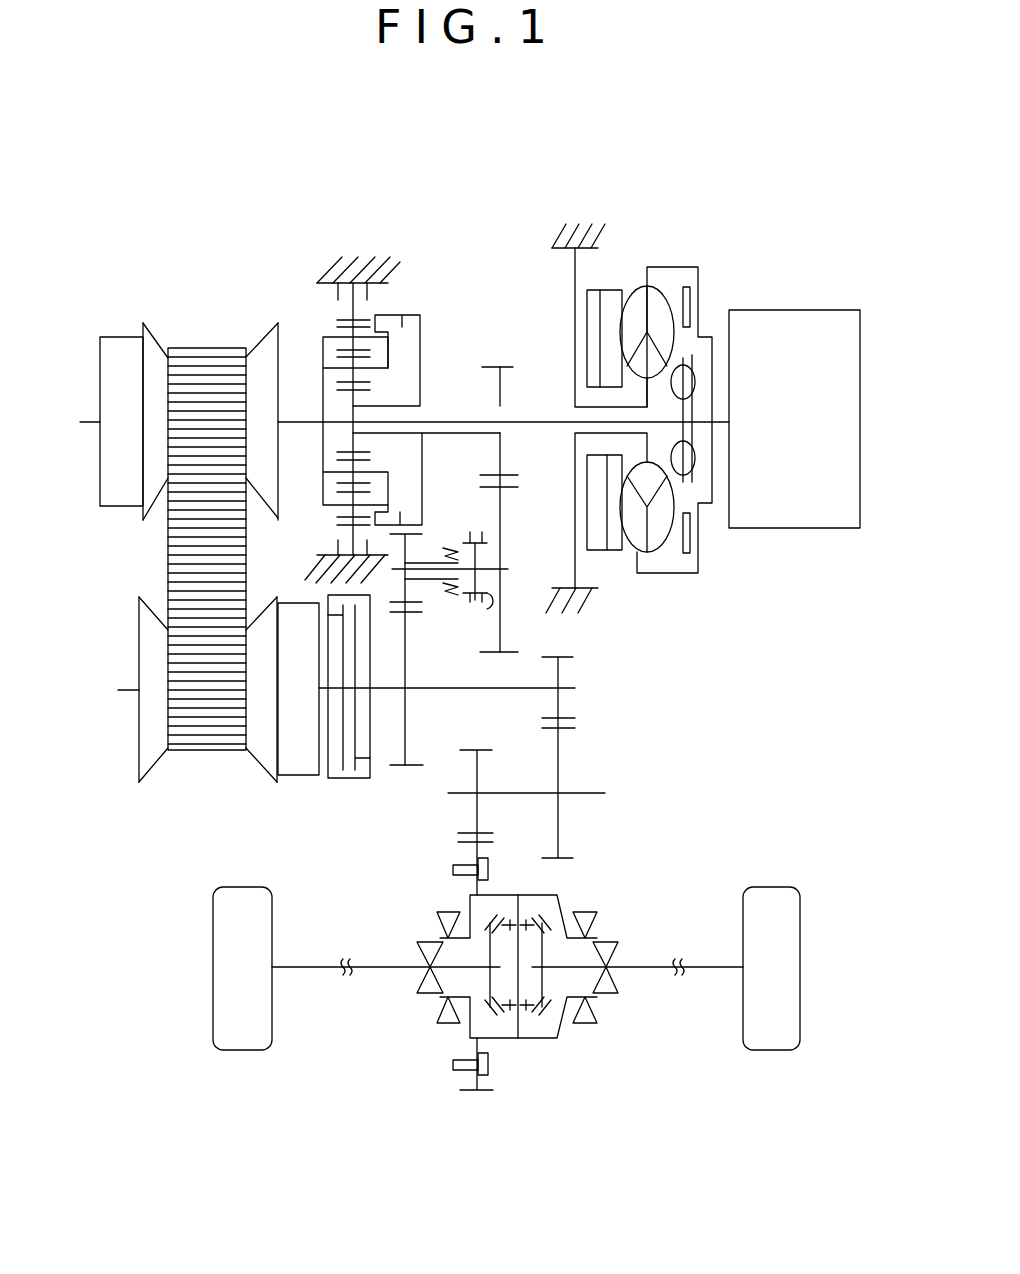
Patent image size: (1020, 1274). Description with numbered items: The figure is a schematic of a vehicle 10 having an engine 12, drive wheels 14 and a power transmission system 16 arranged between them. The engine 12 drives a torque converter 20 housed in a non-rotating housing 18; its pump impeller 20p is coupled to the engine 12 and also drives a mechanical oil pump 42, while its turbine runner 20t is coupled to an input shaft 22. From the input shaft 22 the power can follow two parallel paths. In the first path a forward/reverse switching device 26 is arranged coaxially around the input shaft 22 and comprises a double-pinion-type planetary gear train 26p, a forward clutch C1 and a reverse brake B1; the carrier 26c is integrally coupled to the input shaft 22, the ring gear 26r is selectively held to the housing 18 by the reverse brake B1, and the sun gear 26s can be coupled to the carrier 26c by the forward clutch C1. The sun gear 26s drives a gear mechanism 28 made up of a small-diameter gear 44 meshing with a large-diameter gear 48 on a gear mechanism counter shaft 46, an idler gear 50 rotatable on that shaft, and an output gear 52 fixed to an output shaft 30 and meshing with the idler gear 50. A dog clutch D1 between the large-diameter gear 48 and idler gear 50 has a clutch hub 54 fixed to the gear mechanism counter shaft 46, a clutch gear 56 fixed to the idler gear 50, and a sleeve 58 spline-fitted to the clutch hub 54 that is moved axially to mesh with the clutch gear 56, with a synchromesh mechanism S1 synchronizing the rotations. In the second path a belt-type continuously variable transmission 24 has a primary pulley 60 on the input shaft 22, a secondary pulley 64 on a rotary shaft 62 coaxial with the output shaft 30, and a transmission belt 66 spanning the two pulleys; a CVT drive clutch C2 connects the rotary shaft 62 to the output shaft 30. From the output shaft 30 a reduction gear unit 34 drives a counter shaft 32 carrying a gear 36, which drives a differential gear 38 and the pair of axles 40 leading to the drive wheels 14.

The vehicle 10 is at (757, 177).
The engine 12 is at (785, 326).
The drive wheels 14 is at (242, 893).
The power transmission system 16 is at (650, 216).
The housing 18 is at (572, 240).
The torque converter 20 is at (647, 394).
The pump impeller 20p is at (633, 300).
The turbine runner 20t is at (670, 300).
The input shaft 22 is at (518, 420).
The belt-type continuously variable transmission 24 is at (193, 300).
The forward/reverse switching device 26 is at (412, 291).
The ring gear 26r is at (338, 314).
The double-pinion-type planetary gear train 26p is at (332, 535).
The sun gear 26s is at (347, 452).
The carrier 26c is at (407, 375).
The gear mechanism 28 is at (472, 328).
The output shaft 30 is at (448, 690).
The counter shaft 32 is at (593, 793).
The reduction gear unit 34 is at (590, 718).
The gear 36 is at (478, 750).
The differential gear 38 is at (520, 1046).
The axles 40 is at (368, 966).
The mechanical oil pump 42 is at (597, 300).
The small-diameter gear 44 is at (508, 365).
The gear mechanism counter shaft 46 is at (502, 568).
The large-diameter gear 48 is at (492, 654).
The idler gear 50 is at (390, 612).
The output gear 52 is at (392, 770).
The clutch hub 54 is at (484, 619).
The clutch gear 56 is at (470, 598).
The sleeve 58 is at (484, 624).
The primary pulley 60 is at (90, 378).
The rotary shaft 62 is at (120, 692).
The secondary pulley 64 is at (128, 657).
The transmission belt 66 is at (208, 750).
The reverse brake B1 is at (321, 301).
The forward clutch C1 is at (426, 409).
The CVT drive clutch C2 is at (349, 702).
The dog clutch D1 is at (463, 530).
The synchromesh mechanism S1 is at (455, 545).